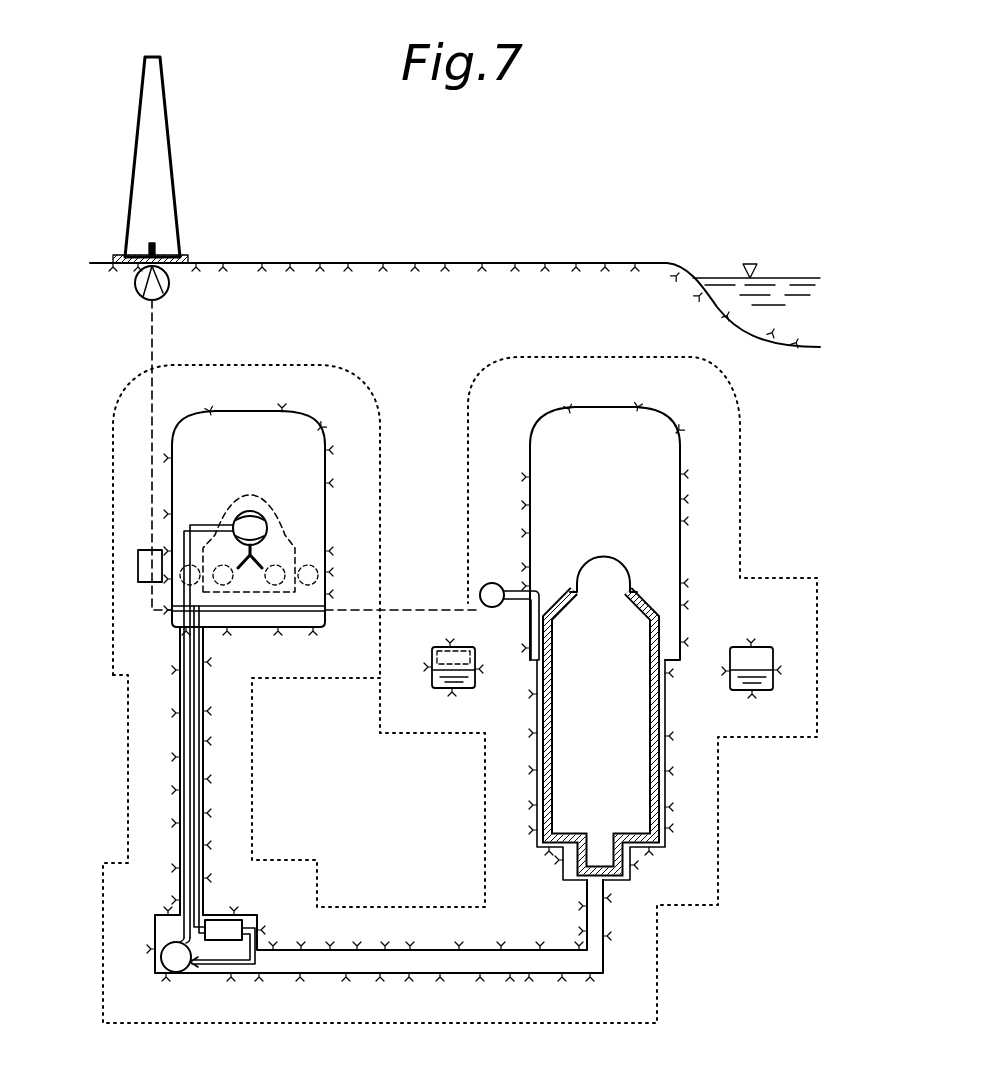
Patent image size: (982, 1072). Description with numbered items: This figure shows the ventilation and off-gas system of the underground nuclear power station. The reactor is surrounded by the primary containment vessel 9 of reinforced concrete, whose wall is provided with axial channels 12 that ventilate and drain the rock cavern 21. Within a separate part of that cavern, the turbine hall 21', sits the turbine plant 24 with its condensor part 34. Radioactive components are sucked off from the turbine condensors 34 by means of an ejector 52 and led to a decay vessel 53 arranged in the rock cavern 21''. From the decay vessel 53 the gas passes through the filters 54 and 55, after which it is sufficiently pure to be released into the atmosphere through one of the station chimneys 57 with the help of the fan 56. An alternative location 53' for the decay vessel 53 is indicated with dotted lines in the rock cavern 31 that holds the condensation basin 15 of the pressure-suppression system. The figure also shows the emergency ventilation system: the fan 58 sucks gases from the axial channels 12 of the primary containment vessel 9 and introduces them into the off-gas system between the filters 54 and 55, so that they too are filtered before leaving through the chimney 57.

The station chimney 57 is at (160, 190).
The fan 56 is at (165, 285).
The turbine hall 21' is at (248, 499).
The filter 55 is at (141, 552).
The ejector 52 is at (247, 513).
The turbine plant 24 is at (278, 538).
The condensor part 34 is at (277, 585).
The rock cavern 21'' is at (379, 919).
The filter 54 is at (225, 917).
The decay vessel 53 is at (196, 970).
The rock cavern 21 is at (605, 510).
The fan 58 is at (487, 584).
The axial channels 12 is at (538, 752).
The primary containment vessel 9 is at (655, 750).
The alternative location for the decay vessel 53' is at (425, 667).
The condensation basin 15 is at (458, 688).
The rock cavern 31 is at (755, 645).